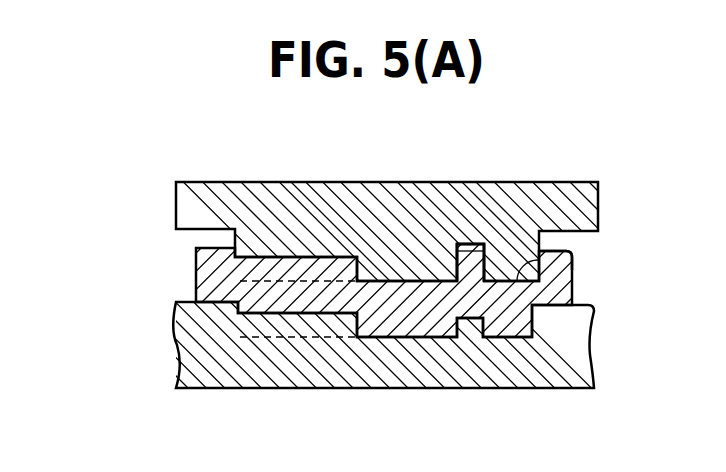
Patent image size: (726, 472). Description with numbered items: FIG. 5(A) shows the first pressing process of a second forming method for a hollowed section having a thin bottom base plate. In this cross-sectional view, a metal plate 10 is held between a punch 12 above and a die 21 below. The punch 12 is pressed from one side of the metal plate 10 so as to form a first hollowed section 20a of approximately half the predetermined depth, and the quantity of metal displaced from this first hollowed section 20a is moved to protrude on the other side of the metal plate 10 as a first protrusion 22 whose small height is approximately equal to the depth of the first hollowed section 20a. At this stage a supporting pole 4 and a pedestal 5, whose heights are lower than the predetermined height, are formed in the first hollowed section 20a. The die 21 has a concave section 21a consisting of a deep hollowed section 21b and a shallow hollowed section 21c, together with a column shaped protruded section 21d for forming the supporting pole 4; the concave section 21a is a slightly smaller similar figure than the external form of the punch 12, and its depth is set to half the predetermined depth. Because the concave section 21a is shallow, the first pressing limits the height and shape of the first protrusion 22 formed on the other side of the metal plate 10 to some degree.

The punch 12 is at (185, 204).
The metal plate 10 is at (203, 278).
The die 21 is at (180, 362).
The supporting pole 4 is at (470, 266).
The pedestal 5 is at (297, 267).
The first hollowed section 20a is at (573, 263).
The first protrusion 22 is at (522, 327).
The concave section 21a is at (392, 332).
The deep hollowed section 21b is at (441, 333).
The shallow hollowed section 21c is at (278, 304).
The column shaped protruded section 21d is at (468, 328).